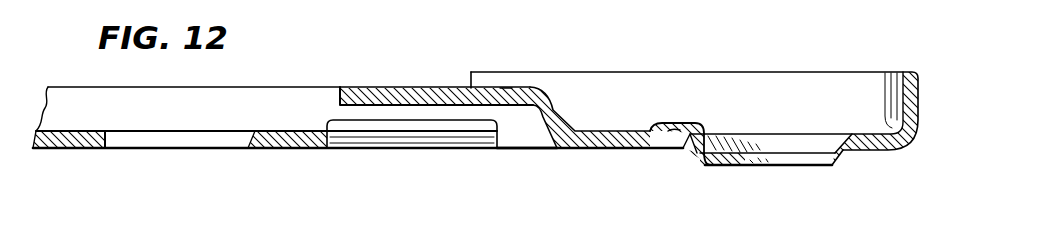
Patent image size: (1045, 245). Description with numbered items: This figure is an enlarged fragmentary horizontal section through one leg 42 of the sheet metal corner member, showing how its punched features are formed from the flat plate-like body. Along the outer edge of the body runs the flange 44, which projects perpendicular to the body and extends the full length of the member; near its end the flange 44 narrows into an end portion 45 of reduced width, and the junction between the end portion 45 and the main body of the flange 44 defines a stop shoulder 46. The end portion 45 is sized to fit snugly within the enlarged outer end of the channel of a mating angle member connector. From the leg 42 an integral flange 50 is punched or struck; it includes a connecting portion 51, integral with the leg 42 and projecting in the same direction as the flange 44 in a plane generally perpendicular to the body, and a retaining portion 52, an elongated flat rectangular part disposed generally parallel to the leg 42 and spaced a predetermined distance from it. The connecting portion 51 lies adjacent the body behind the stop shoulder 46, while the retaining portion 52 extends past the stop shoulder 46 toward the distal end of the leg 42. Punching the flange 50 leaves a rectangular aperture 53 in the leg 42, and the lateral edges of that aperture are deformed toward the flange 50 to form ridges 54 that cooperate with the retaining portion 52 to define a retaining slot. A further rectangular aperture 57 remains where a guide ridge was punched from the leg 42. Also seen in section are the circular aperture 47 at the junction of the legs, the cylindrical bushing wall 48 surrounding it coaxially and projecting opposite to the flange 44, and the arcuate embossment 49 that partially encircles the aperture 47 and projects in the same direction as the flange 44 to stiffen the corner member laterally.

The leg 42 is at (68, 150).
The flange 44 is at (620, 85).
The end portion 45 is at (287, 101).
The stop shoulder 46 is at (470, 78).
The circular aperture 47 is at (777, 168).
The cylindrical bushing wall 48 is at (845, 155).
The arcuate embossment 49 is at (672, 118).
The flange 50 is at (505, 88).
The connecting portion 51 is at (546, 112).
The retaining portion 52 is at (362, 97).
The rectangular aperture 53 is at (524, 136).
The ridge 54 is at (410, 124).
The rectangular aperture 57 is at (247, 149).